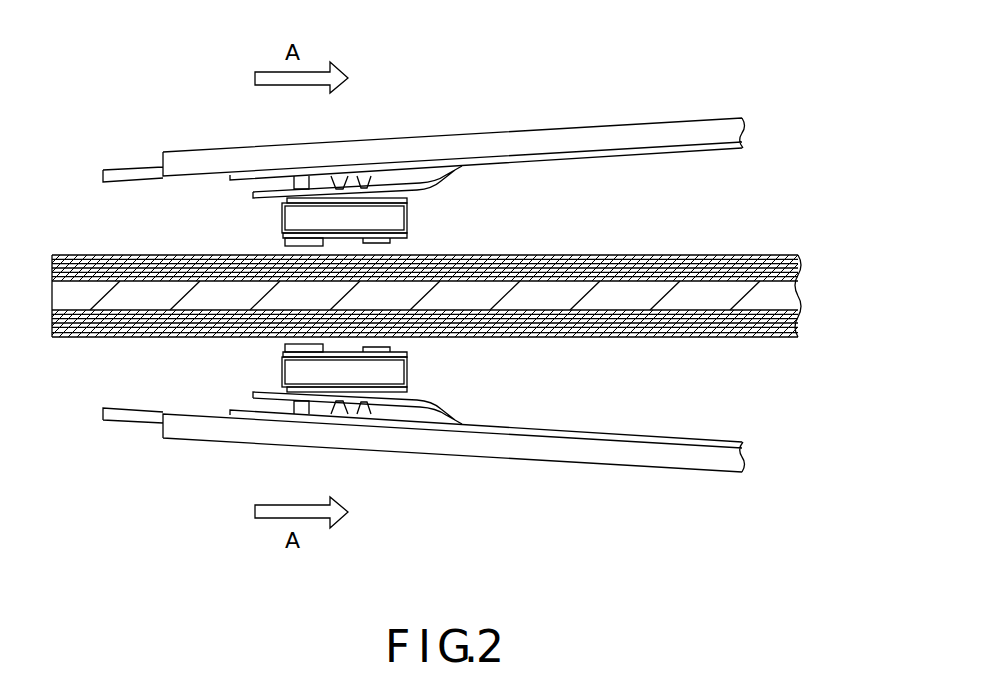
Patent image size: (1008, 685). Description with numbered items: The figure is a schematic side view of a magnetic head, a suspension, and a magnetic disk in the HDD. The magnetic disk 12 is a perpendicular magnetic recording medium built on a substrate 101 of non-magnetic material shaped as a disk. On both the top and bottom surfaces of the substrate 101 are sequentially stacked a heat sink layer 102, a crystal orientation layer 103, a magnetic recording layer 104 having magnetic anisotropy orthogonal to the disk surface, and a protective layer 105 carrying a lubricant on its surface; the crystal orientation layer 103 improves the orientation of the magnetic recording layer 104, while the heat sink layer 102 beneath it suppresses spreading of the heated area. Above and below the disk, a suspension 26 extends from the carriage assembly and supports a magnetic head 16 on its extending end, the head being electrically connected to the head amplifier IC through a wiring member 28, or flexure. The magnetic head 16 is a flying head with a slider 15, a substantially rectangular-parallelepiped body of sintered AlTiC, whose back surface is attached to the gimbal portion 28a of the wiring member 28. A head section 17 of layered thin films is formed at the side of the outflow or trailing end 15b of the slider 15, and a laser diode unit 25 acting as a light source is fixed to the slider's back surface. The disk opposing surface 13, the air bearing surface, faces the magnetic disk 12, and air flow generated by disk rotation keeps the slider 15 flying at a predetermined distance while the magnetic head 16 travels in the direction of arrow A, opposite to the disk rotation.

The magnetic disk 12 is at (748, 231).
The disk opposing surface (air bearing surface) 13 is at (346, 240).
The slider 15 is at (366, 208).
The outflow end (trailing end) 15b is at (284, 213).
The magnetic head 16 is at (412, 212).
The head section 17 is at (290, 246).
The laser diode unit (LDU) 25 is at (300, 177).
The suspension 26 is at (606, 126).
The wiring member (flexure) 28 is at (623, 153).
The gimbal portion 28a is at (396, 186).
The substrate 101 is at (668, 303).
The heat sink layer 102 is at (800, 286).
The crystal orientation layer 103 is at (718, 255).
The magnetic recording layer 104 is at (779, 255).
The protective layer 105 is at (666, 255).